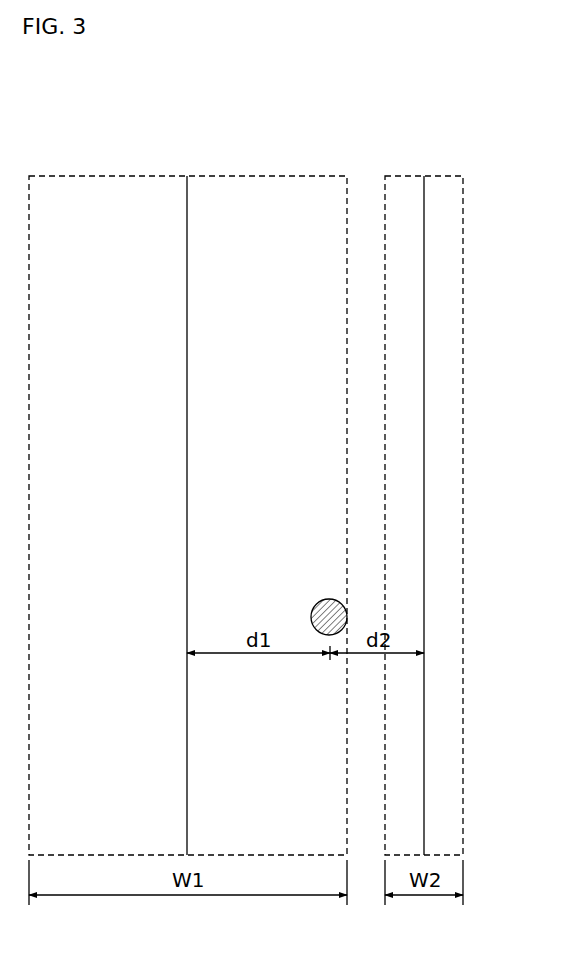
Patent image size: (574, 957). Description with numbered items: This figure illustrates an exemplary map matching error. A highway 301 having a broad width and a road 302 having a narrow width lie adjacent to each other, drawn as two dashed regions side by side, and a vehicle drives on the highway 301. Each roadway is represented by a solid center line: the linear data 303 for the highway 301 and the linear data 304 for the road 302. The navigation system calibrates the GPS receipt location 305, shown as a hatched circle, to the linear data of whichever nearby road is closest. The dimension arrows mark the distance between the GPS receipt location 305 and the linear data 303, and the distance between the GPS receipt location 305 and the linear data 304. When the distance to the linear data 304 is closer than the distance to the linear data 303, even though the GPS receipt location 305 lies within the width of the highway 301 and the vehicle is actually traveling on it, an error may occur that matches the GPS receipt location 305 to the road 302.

The highway 301 is at (207, 175).
The road 302 is at (432, 176).
The linear data for the highway 303 is at (185, 220).
The linear data for the road 304 is at (425, 257).
The GPS receipt location 305 is at (329, 599).